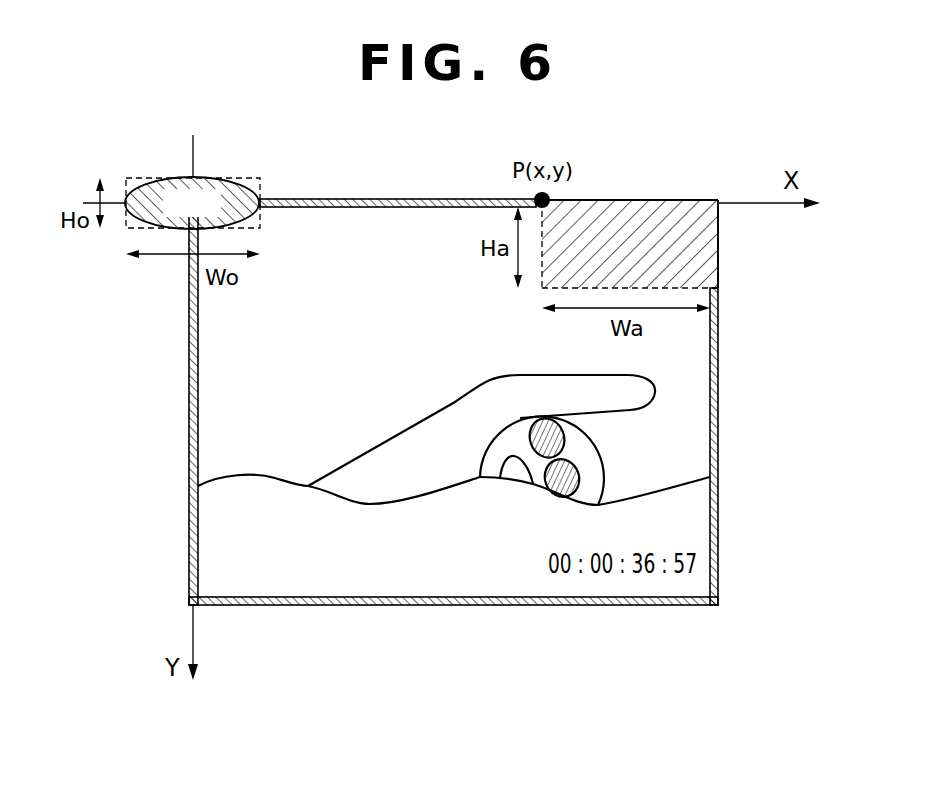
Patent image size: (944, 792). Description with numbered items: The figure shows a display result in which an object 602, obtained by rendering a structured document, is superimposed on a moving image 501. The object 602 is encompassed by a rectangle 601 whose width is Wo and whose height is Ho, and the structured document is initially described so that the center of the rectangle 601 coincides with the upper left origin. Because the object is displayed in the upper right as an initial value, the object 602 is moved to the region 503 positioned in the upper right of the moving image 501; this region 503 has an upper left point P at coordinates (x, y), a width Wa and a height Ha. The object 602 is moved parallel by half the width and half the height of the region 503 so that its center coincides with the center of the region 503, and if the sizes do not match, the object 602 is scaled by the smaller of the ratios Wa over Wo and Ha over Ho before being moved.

The moving image 501 is at (720, 395).
The region 503 is at (720, 233).
The rectangle 601 is at (144, 176).
The object 602 is at (246, 178).